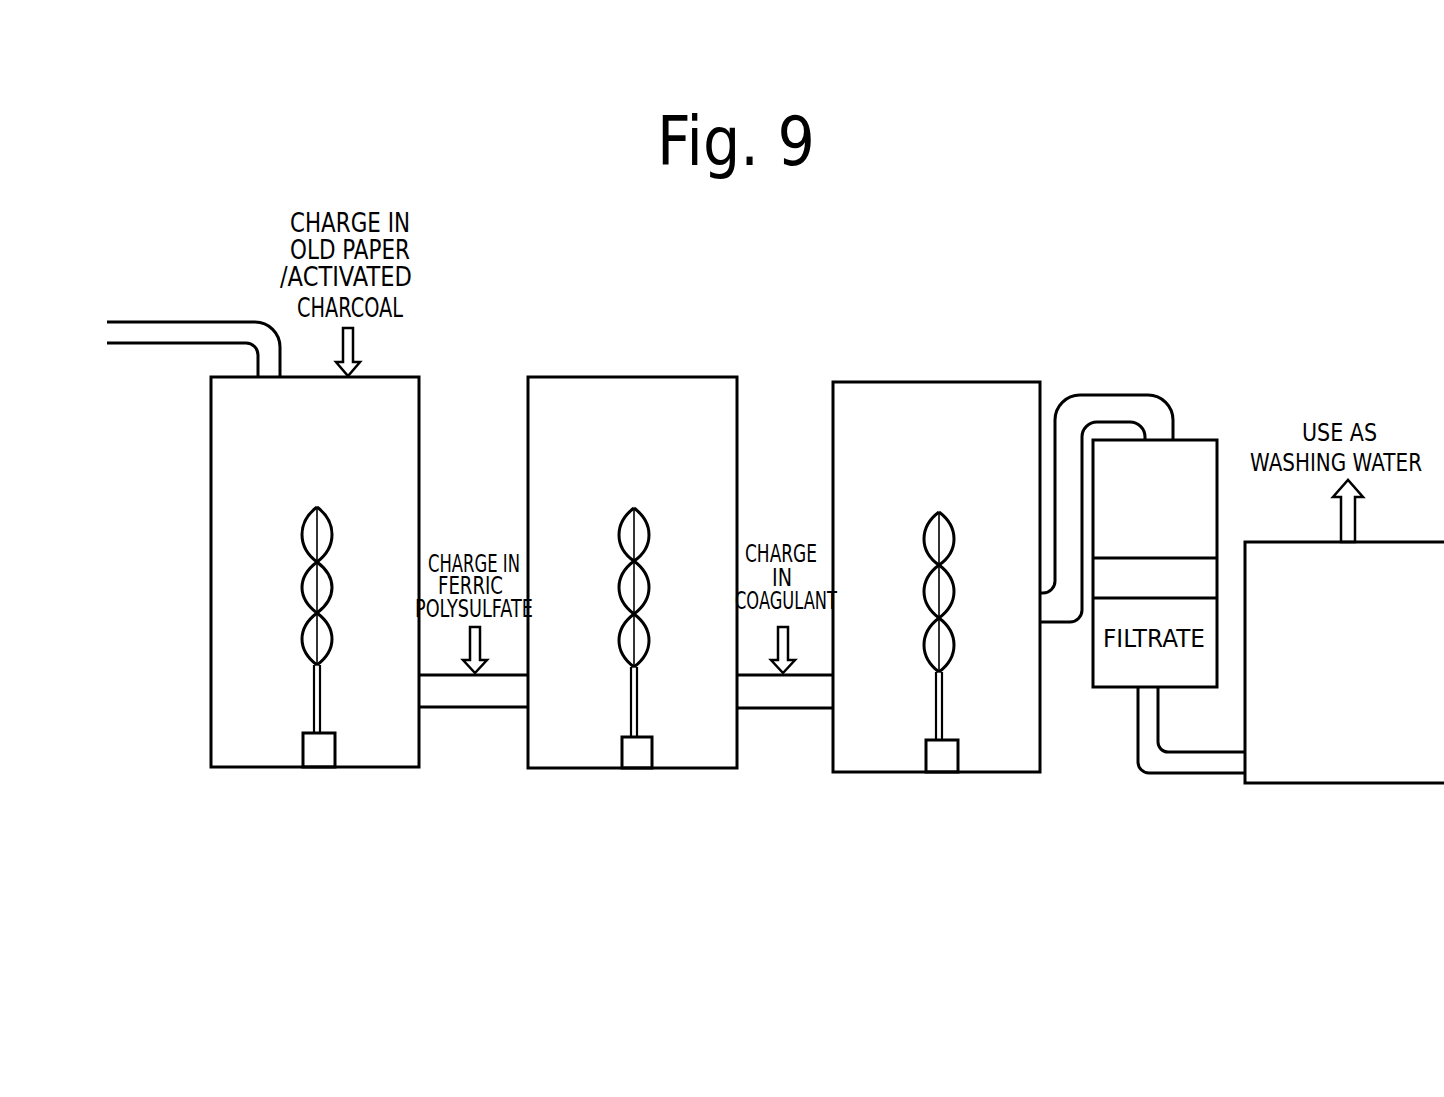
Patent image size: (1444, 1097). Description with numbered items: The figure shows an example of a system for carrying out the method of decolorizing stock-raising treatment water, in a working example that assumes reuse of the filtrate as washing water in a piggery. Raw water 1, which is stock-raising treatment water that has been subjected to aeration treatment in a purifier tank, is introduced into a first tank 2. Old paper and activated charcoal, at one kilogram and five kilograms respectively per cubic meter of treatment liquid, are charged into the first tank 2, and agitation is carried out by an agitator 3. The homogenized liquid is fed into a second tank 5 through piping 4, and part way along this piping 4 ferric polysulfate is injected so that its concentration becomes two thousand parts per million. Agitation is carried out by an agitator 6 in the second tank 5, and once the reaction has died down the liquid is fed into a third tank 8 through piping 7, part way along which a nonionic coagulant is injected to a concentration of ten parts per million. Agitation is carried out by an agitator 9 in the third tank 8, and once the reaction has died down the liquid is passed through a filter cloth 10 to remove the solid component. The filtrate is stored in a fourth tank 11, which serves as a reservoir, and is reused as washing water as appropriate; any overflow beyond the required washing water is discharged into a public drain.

The raw water 1 is at (193, 278).
The first tank 2 is at (315, 572).
The agitator 3 is at (286, 637).
The piping 4 is at (473, 727).
The second tank 5 is at (632, 572).
The agitator 6 is at (606, 638).
The piping 7 is at (785, 729).
The third tank 8 is at (936, 577).
The agitator 9 is at (912, 642).
The filter cloth 10 is at (1147, 582).
The fourth tank 11 is at (1344, 662).